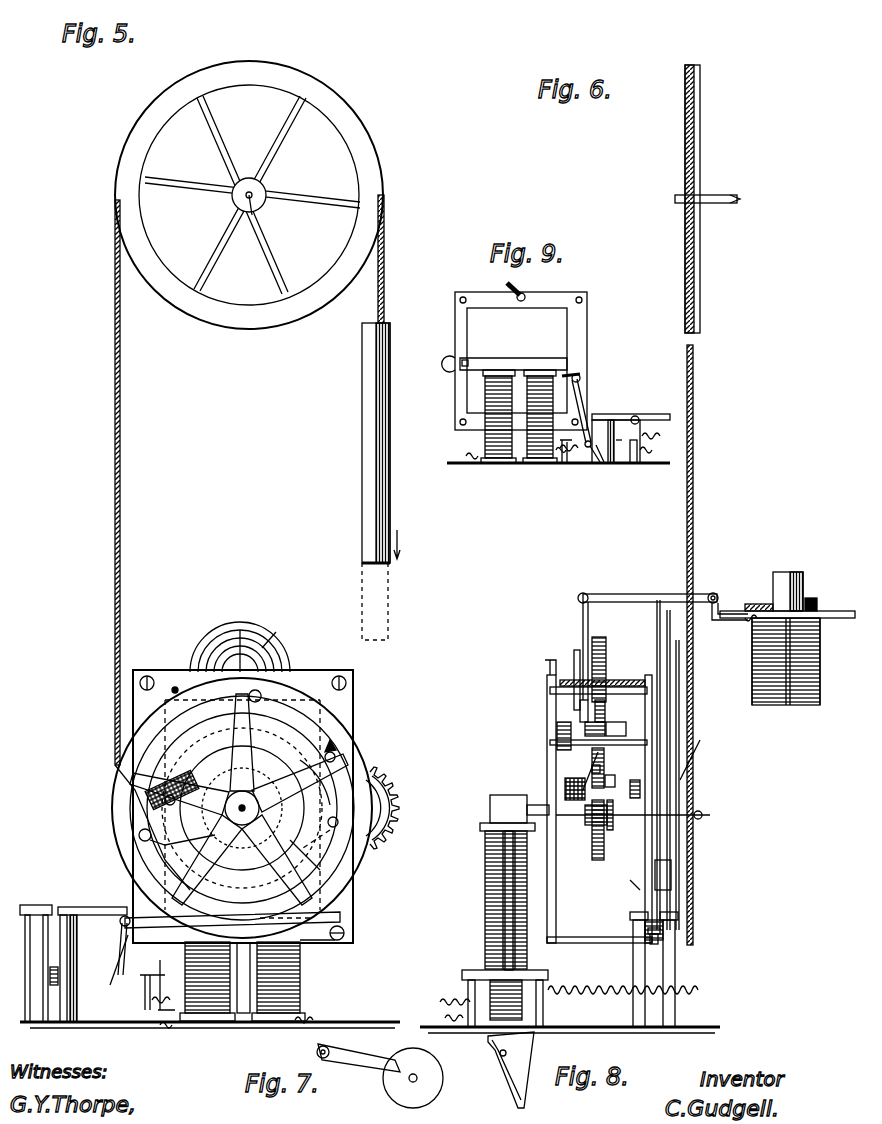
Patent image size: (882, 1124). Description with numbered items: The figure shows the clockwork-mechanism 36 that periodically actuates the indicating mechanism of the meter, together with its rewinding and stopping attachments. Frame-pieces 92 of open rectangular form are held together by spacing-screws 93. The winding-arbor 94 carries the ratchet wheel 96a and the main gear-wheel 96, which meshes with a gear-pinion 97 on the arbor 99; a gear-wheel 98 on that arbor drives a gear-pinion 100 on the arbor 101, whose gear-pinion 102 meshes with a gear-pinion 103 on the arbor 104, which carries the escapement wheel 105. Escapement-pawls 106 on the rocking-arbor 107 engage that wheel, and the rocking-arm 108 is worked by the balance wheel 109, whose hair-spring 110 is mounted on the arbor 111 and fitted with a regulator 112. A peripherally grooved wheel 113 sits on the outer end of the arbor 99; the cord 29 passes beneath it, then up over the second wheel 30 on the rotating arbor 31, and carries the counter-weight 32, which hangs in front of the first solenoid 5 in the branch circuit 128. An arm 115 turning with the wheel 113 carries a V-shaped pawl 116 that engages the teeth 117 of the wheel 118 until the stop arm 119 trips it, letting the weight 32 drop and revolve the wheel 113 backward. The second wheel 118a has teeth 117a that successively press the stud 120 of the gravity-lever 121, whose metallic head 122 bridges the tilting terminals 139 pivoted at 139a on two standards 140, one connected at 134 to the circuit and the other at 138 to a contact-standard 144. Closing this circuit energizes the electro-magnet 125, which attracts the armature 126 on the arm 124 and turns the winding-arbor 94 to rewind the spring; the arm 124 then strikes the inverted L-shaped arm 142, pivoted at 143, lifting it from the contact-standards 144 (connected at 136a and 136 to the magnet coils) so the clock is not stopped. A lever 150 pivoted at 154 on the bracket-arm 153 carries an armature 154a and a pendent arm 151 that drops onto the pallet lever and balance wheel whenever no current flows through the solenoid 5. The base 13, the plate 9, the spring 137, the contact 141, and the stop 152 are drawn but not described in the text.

In FIG. 6, the first solenoid 5 is at (800, 684).
In FIG. 6, the plate 9 is at (822, 616).
In FIG. 9, the base 13 is at (462, 430).
In FIG. 5, the cord 29 is at (384, 272).
In FIG. 9, the cord 29 is at (695, 404).
In FIG. 6, the cord 29 is at (690, 645).
In FIG. 5, the second wheel 30 is at (364, 140).
In FIG. 6, the second wheel 30 is at (700, 172).
In FIG. 5, the rotating arbor 31 is at (252, 206).
In FIG. 6, the rotating arbor 31 is at (727, 206).
In FIG. 5, the counter-weight 32 is at (385, 441).
In FIG. 9, the clockwork-mechanism 36 is at (474, 465).
In FIG. 5, the frame-pieces 92 is at (320, 676).
In FIG. 9, the frame-pieces 92 is at (568, 310).
In FIG. 6, the frame-pieces 92 is at (652, 714).
In FIG. 9, the spacing-screws 93 is at (470, 300).
In FIG. 6, the spacing-screws 93 is at (606, 690).
In FIG. 9, the winding-arbor 94 is at (468, 366).
In FIG. 6, the winding-arbor 94 is at (538, 804).
In FIG. 5, the main gear-wheel 96 is at (396, 806).
In FIG. 6, the main gear-wheel 96 is at (604, 758).
In FIG. 5, the ratchet wheel 96a is at (370, 822).
In FIG. 6, the gear-pinion 97 is at (606, 838).
In FIG. 6, the gear-wheel 98 is at (608, 772).
In FIG. 5, the arbor 99 is at (246, 808).
In FIG. 6, the arbor 99 is at (612, 824).
In FIG. 6, the gear-pinion 100 is at (614, 782).
In FIG. 6, the arbor 101 is at (625, 792).
In FIG. 6, the gear-pinion 102 is at (578, 789).
In FIG. 5, the gear-pinion 103 is at (160, 737).
In FIG. 6, the gear-pinion 103 is at (541, 738).
In FIG. 6, the arbor 104 is at (624, 728).
In FIG. 6, the escapement wheel 105 is at (603, 728).
In FIG. 6, the escapement-pawls 106 is at (576, 688).
In FIG. 5, the rocking-arbor 107 is at (175, 687).
In FIG. 6, the rocking-arbor 107 is at (611, 711).
In FIG. 6, the rocking-arm 108 is at (608, 711).
In FIG. 5, the balance wheel 109 is at (246, 635).
In FIG. 6, the balance wheel 109 is at (606, 646).
In FIG. 5, the hair-spring 110 is at (270, 648).
In FIG. 6, the hair-spring 110 is at (582, 672).
In FIG. 5, the arbor 111 is at (238, 640).
In FIG. 6, the arbor 111 is at (650, 690).
In FIG. 5, the regulator 112 is at (262, 688).
In FIG. 9, the regulator 112 is at (522, 292).
In FIG. 6, the regulator 112 is at (796, 592).
In FIG. 5, the peripherally grooved wheel 113 is at (346, 738).
In FIG. 6, the peripherally grooved wheel 113 is at (680, 772).
In FIG. 5, the arm 115 is at (215, 813).
In FIG. 7, the arm 115 is at (395, 1082).
In FIG. 6, the arm 115 is at (690, 778).
In FIG. 5, the V-shaped pawl 116 is at (168, 798).
In FIG. 8, the V-shaped pawl 116 is at (504, 1078).
In FIG. 6, the V-shaped pawl 116 is at (700, 816).
In FIG. 5, the teeth 117 is at (300, 840).
In FIG. 6, the teeth 117 is at (640, 888).
In FIG. 5, the teeth 117a is at (335, 826).
In FIG. 6, the teeth 117a is at (660, 745).
In FIG. 5, the wheel 118 is at (150, 840).
In FIG. 6, the wheel 118 is at (670, 758).
In FIG. 5, the second wheel 118a is at (332, 795).
In FIG. 6, the second wheel 118a is at (670, 880).
In FIG. 5, the stop arm 119 is at (138, 836).
In FIG. 5, the stud 120 is at (290, 913).
In FIG. 6, the stud 120 is at (688, 926).
In FIG. 5, the gravity-lever 121 is at (326, 944).
In FIG. 9, the gravity-lever 121 is at (658, 414).
In FIG. 5, the metallic head 122 is at (127, 936).
In FIG. 9, the metallic head 122 is at (598, 463).
In FIG. 6, the metallic head 122 is at (688, 946).
In FIG. 9, the arm 124 is at (505, 366).
In FIG. 6, the arm 124 is at (502, 795).
In FIG. 5, the electro-magnet 125 is at (185, 978).
In FIG. 9, the electro-magnet 125 is at (502, 462).
In FIG. 6, the electro-magnet 125 is at (486, 924).
In FIG. 5, the armature 126 is at (451, 823).
In FIG. 9, the armature 126 is at (540, 372).
In FIG. 6, the armature 126 is at (490, 820).
In FIG. 5, the branch circuit 128 is at (336, 757).
In FIG. 5, the connection 134 is at (210, 1035).
In FIG. 6, the connection 134 is at (700, 990).
In FIG. 5, the connection 136 is at (296, 1024).
In FIG. 5, the connection 136a is at (152, 1000).
In FIG. 9, the connection 136a is at (558, 462).
In FIG. 6, the connection 136a is at (436, 1007).
In FIG. 9, the spring 137 is at (668, 436).
In FIG. 9, the connection 138 is at (654, 452).
In FIG. 6, the connection 138 is at (605, 1011).
In FIG. 5, the tilting terminals 139 is at (80, 907).
In FIG. 9, the tilting terminals 139 is at (620, 418).
In FIG. 6, the tilting terminals 139 is at (636, 912).
In FIG. 5, the pivotal points 139a is at (36, 905).
In FIG. 9, the pivotal points 139a is at (636, 418).
In FIG. 5, the standards 140 is at (42, 936).
In FIG. 9, the standards 140 is at (636, 462).
In FIG. 6, the standards 140 is at (634, 962).
In FIG. 5, the contact 141 is at (60, 978).
In FIG. 9, the contact 141 is at (618, 462).
In FIG. 5, the inverted L-shaped arm 142 is at (148, 975).
In FIG. 9, the inverted L-shaped arm 142 is at (585, 380).
In FIG. 6, the inverted L-shaped arm 142 is at (508, 885).
In FIG. 9, the pivot 143 is at (582, 372).
In FIG. 6, the pivot 143 is at (505, 860).
In FIG. 5, the contact-standards 144 is at (110, 1040).
In FIG. 9, the contact-standards 144 is at (568, 463).
In FIG. 6, the contact-standards 144 is at (462, 978).
In FIG. 6, the lever 150 is at (645, 596).
In FIG. 6, the pendent arm 151 is at (590, 616).
In FIG. 6, the stop 152 is at (815, 606).
In FIG. 6, the bracket-arm 153 is at (728, 622).
In FIG. 6, the pivot 154 is at (715, 594).
In FIG. 6, the armature 154a is at (766, 596).